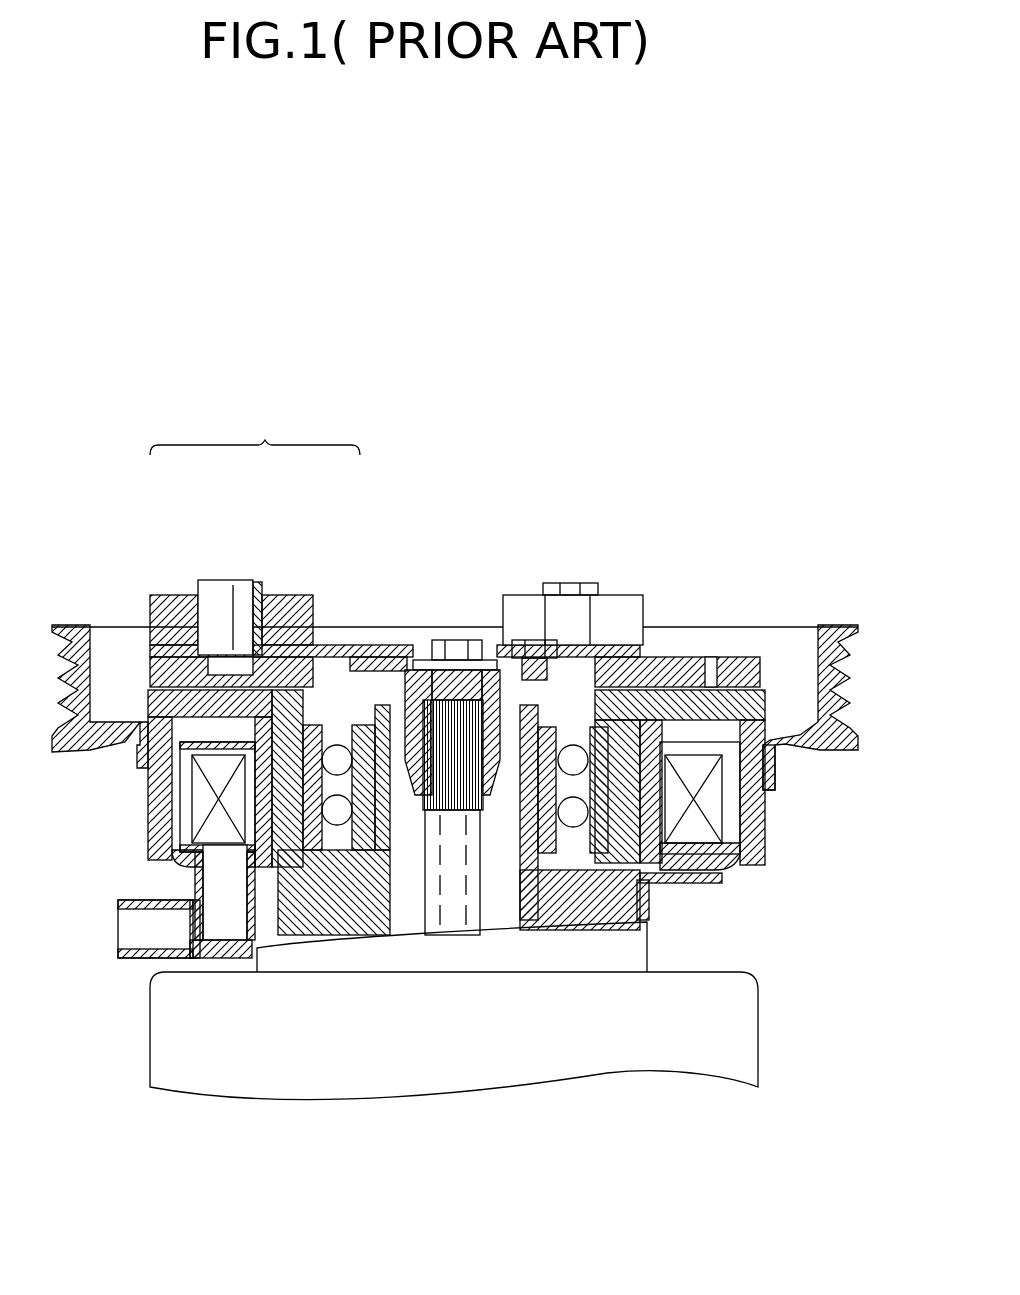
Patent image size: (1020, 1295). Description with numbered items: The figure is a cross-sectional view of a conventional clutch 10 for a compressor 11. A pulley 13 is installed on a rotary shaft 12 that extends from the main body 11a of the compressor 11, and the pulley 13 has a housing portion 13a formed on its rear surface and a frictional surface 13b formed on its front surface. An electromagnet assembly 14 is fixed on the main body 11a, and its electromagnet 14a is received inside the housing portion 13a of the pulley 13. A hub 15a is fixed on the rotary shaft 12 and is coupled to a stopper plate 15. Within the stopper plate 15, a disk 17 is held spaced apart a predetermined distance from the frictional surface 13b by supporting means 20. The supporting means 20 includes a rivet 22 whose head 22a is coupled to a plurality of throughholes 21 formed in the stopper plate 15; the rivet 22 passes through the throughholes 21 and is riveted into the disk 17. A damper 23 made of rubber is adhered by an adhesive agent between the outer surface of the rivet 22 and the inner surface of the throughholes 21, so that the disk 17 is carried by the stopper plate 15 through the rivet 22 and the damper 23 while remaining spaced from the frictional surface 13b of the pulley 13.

The electromagnetic clutch 10 is at (500, 568).
The compressor 11 is at (780, 990).
The main body 11a is at (678, 1050).
The rotary shaft 12 is at (440, 640).
The pulley 13 is at (868, 665).
The housing portion 13a is at (776, 773).
The frictional surface 13b is at (738, 658).
The electromagnet assembly 14 is at (160, 879).
The electromagnet 14a is at (197, 800).
The stopper plate 15 is at (625, 643).
The hub 15a is at (390, 663).
The disk 17 is at (152, 648).
The supporting means 20 is at (255, 429).
The throughholes 21 is at (162, 628).
The rivet 22 is at (226, 568).
The head 22a is at (256, 587).
The damper 23 is at (308, 597).